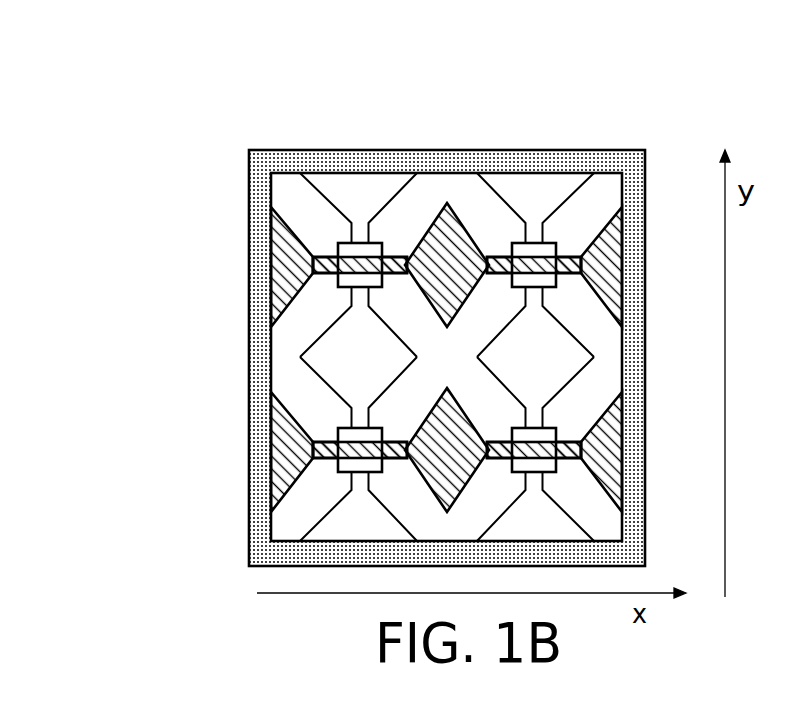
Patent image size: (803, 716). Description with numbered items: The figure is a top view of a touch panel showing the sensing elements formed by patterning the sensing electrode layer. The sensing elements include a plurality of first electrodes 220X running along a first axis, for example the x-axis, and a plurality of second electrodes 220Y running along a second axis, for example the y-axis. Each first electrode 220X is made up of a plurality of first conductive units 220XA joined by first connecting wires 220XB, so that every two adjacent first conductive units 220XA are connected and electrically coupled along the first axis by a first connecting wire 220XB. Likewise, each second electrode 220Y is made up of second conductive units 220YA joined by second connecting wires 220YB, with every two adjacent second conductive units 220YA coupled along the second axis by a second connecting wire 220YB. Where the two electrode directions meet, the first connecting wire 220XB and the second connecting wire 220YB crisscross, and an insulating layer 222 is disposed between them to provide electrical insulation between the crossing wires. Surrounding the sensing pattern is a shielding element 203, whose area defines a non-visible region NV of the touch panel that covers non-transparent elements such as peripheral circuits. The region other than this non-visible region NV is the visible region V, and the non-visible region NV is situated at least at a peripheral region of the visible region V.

The shielding element 203 is at (250, 538).
The non-visible region NV is at (268, 478).
The second electrode 220Y is at (441, 276).
The second conductive unit 220YA is at (355, 192).
The second connecting wire 220YB is at (368, 232).
The first electrode 220X is at (316, 359).
The first conductive unit 220XA is at (283, 264).
The first connecting wire 220XB is at (332, 277).
The insulating layer 222 is at (345, 428).
The visible region V is at (592, 198).